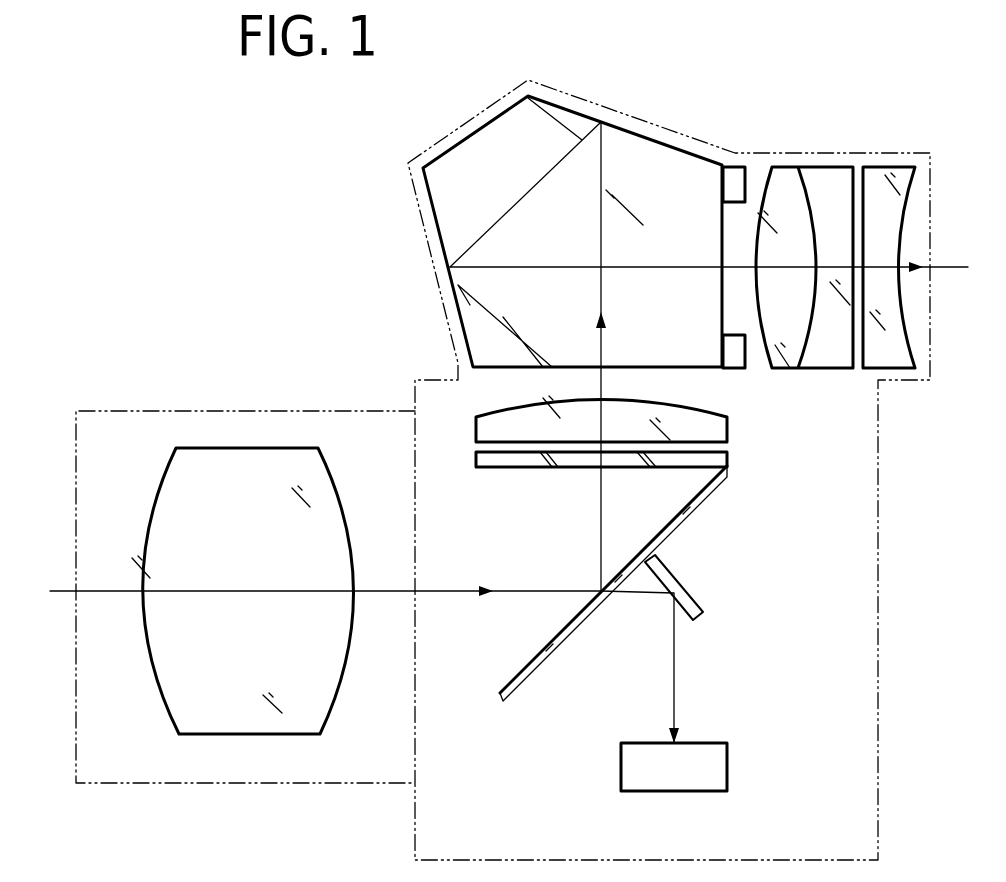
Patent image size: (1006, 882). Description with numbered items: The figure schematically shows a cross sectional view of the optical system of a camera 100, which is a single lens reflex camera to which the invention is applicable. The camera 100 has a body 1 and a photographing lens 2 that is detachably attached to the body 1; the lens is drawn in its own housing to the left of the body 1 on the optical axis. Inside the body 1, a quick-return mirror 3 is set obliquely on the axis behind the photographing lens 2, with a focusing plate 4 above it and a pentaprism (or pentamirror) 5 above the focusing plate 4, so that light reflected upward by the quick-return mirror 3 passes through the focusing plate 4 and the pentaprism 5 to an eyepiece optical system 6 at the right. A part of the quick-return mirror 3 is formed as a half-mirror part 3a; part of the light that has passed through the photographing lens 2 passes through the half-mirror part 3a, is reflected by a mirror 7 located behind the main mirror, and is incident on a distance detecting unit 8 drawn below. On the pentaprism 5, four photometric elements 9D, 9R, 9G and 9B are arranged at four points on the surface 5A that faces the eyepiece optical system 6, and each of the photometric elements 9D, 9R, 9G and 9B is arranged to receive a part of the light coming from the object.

The camera 100 is at (190, 196).
The body 1 is at (878, 725).
The photographing lens 2 is at (225, 783).
The quick-return mirror 3 is at (510, 700).
The half-mirror part 3a is at (605, 600).
The focusing plate 4 is at (735, 465).
The pentaprism 5 is at (430, 199).
The surface 5A is at (727, 312).
The eyepiece optical system 6 is at (845, 382).
The mirror 7 is at (694, 591).
The distance detecting unit 8 is at (728, 762).
The photometric element 9R is at (778, 151).
The photometric element 9D is at (742, 172).
The photometric element 9B is at (781, 395).
The photometric element 9G is at (735, 358).